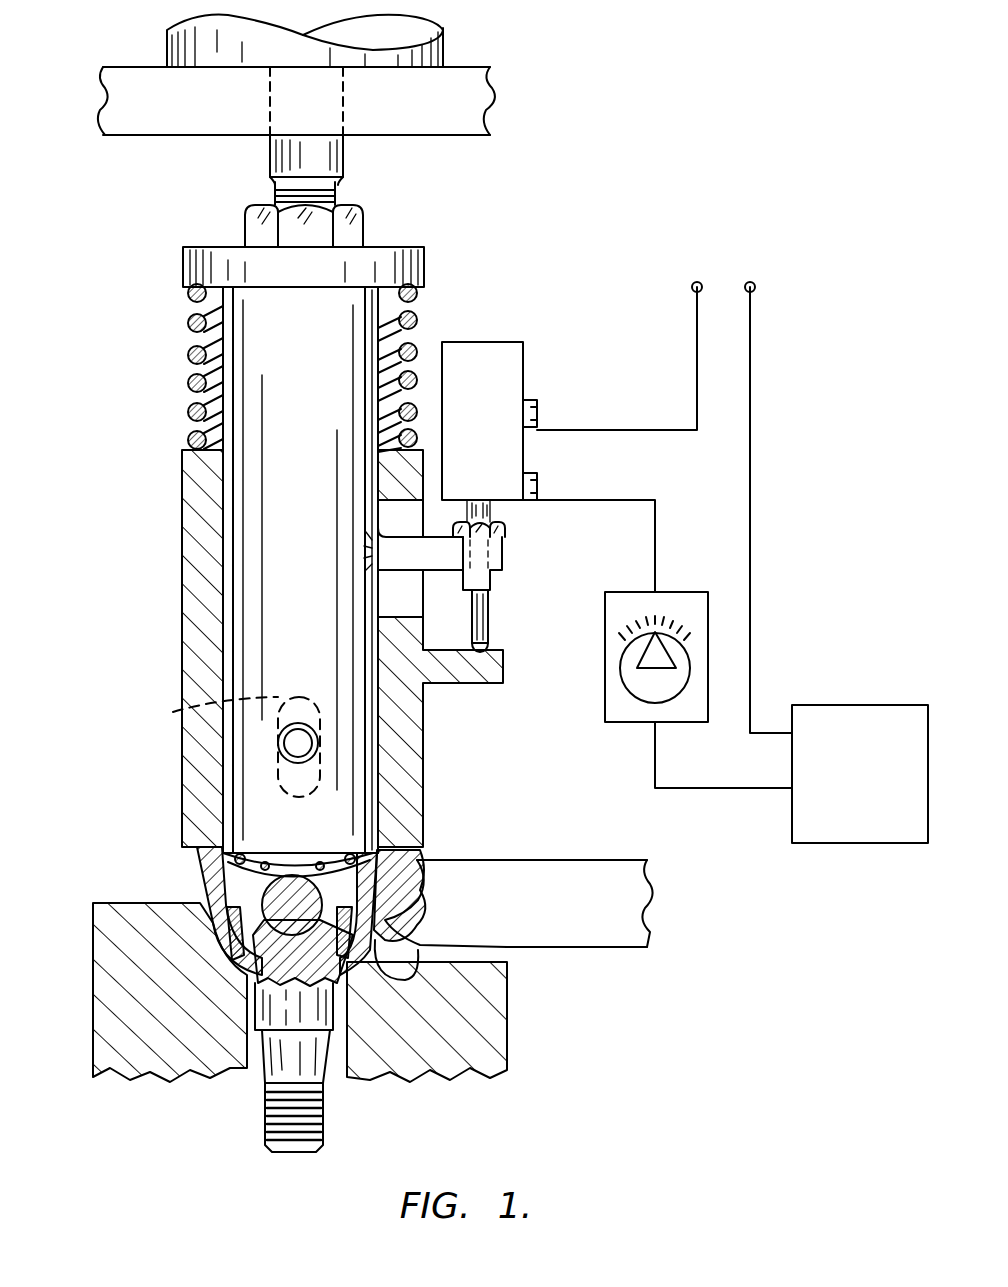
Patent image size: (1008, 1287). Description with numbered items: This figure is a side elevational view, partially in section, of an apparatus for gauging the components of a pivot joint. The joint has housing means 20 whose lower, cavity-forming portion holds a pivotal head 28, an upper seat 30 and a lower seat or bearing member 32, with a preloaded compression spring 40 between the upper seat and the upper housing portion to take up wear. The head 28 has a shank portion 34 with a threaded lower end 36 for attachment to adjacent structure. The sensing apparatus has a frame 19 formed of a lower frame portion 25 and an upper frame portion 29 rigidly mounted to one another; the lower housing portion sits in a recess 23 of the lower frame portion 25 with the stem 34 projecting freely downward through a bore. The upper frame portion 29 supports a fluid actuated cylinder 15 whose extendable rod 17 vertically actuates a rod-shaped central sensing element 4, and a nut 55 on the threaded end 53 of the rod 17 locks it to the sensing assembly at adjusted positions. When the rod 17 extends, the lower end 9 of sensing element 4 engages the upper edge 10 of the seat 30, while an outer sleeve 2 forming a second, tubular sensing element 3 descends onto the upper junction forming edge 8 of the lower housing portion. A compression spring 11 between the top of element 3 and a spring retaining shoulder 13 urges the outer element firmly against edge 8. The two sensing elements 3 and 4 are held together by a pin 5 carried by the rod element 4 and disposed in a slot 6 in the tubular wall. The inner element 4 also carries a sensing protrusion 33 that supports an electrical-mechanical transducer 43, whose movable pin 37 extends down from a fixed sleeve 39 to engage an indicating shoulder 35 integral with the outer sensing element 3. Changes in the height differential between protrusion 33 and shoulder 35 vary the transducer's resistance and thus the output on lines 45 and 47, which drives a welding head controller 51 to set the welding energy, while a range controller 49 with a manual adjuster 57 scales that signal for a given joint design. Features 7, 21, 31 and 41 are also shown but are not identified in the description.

The outer sleeve 2 is at (178, 468).
The second sensing element 3 is at (190, 520).
The central sensing element 4 is at (240, 588).
The pin 5 is at (290, 745).
The slot 6 is at (250, 700).
The cylinder lower end 7 is at (197, 866).
The upper junction edge 8 is at (209, 848).
The lower end 9 is at (280, 855).
The upper edge 10 is at (232, 862).
The compression spring 11 is at (188, 323).
The spring retaining shoulder 13 is at (215, 247).
The fluid actuated cylinder 15 is at (440, 47).
The extendable rod 17 is at (320, 152).
The frame 19 is at (500, 84).
The housing means 20 is at (200, 886).
The plate 21 is at (588, 860).
The recess 23 is at (223, 943).
The lower frame portion 25 is at (482, 1022).
The pivotal head 28 is at (400, 905).
The upper frame portion 29 is at (148, 122).
The upper seat 30 is at (375, 880).
The bolt hole 31 is at (270, 103).
The lower seat 32 is at (420, 978).
The sensing protrusion 33 is at (490, 556).
The shank portion 34 is at (277, 1060).
The indicating shoulder 35 is at (497, 672).
The threaded lower end 36 is at (310, 1118).
The movable pin 37 is at (482, 626).
The fixed sleeve 39 is at (488, 590).
The preloaded spring 40 is at (385, 800).
The lock nut 41 is at (497, 530).
The electrical-mechanical transducer 43 is at (508, 355).
The line 45 is at (697, 368).
The line 47 is at (752, 395).
The range controller 49 is at (690, 600).
The welding head controller 51 is at (808, 830).
The threaded end 53 is at (338, 195).
The nut 55 is at (357, 226).
The manual adjuster 57 is at (665, 660).